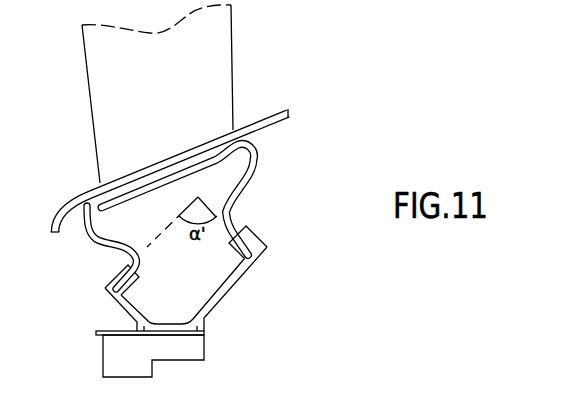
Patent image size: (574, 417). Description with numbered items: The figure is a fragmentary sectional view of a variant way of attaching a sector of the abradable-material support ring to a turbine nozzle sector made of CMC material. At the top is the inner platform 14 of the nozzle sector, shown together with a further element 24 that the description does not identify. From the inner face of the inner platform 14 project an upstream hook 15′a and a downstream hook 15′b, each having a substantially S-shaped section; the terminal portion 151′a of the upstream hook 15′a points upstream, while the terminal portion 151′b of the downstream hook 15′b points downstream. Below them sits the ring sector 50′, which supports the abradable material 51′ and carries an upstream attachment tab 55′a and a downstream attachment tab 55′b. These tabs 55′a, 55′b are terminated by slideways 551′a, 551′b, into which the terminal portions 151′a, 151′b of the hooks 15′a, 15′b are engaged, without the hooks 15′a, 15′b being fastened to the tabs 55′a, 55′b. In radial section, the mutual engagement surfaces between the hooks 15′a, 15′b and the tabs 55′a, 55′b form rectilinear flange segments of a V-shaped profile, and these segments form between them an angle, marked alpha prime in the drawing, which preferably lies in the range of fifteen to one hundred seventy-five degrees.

The inner platform 14 is at (210, 138).
The insert strip 24 is at (177, 178).
The upstream hook 15′a is at (81, 222).
The downstream hook 15′b is at (261, 161).
The terminal portion of the upstream hook 151′a is at (134, 285).
The terminal portion of the downstream hook 151′b is at (234, 252).
The slideway 551′a is at (111, 276).
The slideway 551′b is at (250, 234).
The upstream attachment tab 55′a is at (130, 310).
The downstream attachment tab 55′b is at (218, 297).
The ring sector 50′ is at (204, 289).
The abradable material 51′ is at (192, 352).